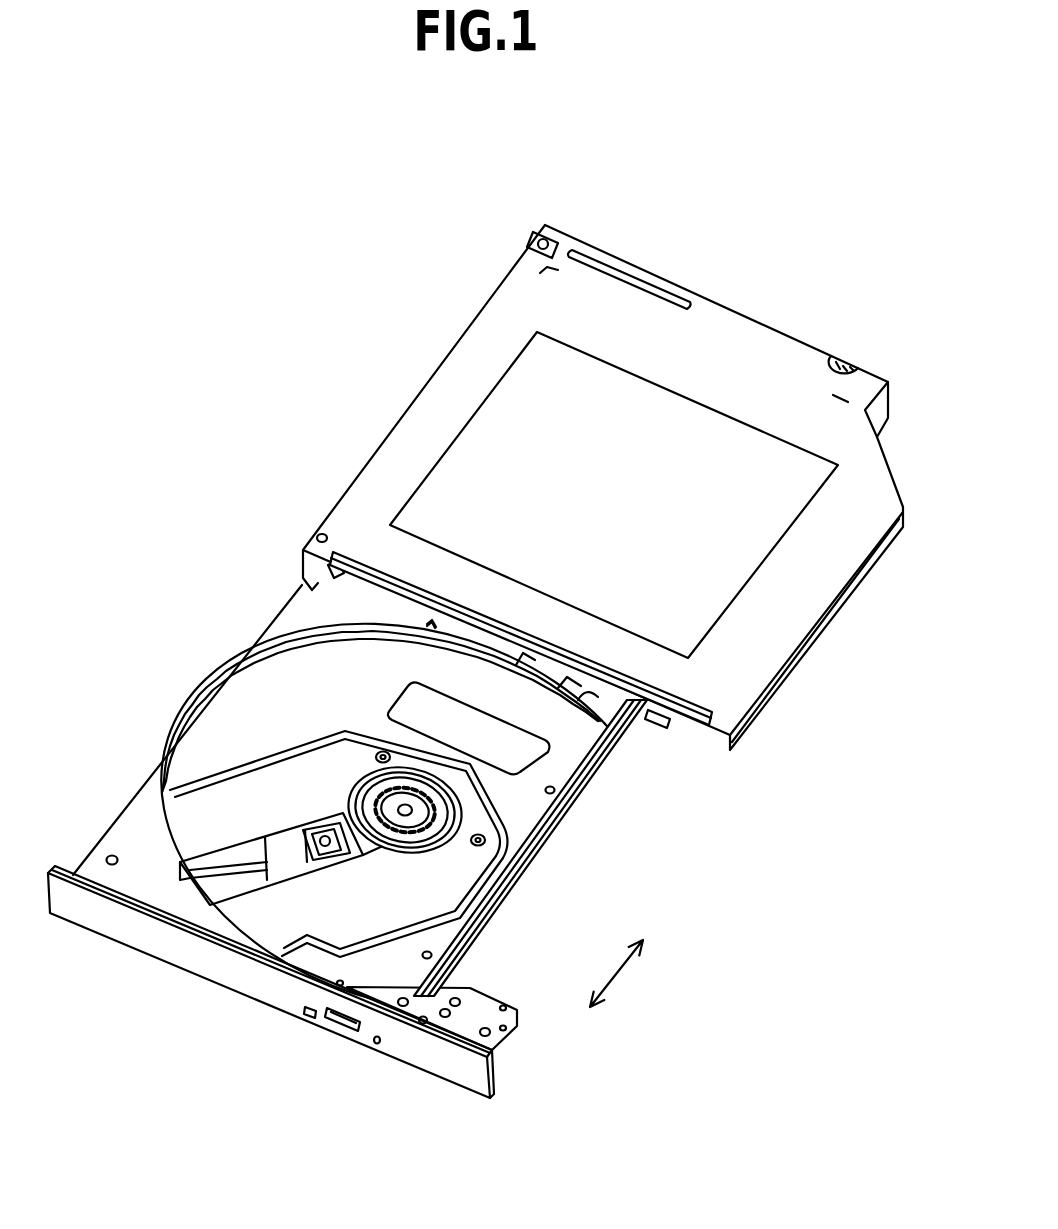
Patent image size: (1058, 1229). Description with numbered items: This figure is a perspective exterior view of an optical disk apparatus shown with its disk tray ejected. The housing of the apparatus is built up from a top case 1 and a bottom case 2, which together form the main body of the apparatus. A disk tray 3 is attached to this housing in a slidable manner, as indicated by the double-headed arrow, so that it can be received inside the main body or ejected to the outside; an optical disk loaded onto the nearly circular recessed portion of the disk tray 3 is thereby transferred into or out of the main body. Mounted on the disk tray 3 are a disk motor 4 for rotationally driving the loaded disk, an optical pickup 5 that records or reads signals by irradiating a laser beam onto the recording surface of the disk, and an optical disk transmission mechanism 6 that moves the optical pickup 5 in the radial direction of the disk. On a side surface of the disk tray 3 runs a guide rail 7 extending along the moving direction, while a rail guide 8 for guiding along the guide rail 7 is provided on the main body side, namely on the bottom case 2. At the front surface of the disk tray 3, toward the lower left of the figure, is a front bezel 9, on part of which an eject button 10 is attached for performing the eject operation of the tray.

The top case 1 is at (402, 455).
The bottom case 2 is at (707, 738).
The disk tray 3 is at (137, 845).
The disk motor 4 is at (437, 830).
The optical pickup 5 is at (298, 872).
The optical disk transmission mechanism 6 is at (277, 775).
The guide rail 7 is at (558, 842).
The rail guide 8 is at (650, 712).
The front bezel 9 is at (150, 942).
The eject button 10 is at (333, 1025).